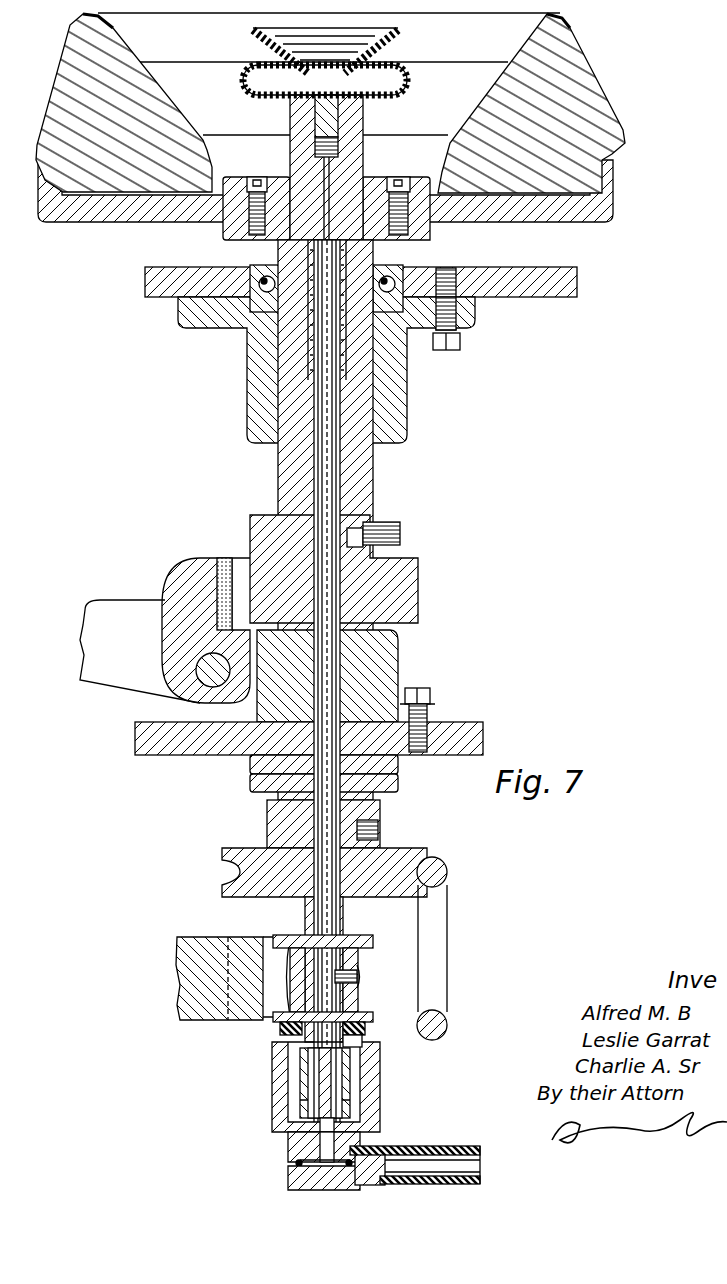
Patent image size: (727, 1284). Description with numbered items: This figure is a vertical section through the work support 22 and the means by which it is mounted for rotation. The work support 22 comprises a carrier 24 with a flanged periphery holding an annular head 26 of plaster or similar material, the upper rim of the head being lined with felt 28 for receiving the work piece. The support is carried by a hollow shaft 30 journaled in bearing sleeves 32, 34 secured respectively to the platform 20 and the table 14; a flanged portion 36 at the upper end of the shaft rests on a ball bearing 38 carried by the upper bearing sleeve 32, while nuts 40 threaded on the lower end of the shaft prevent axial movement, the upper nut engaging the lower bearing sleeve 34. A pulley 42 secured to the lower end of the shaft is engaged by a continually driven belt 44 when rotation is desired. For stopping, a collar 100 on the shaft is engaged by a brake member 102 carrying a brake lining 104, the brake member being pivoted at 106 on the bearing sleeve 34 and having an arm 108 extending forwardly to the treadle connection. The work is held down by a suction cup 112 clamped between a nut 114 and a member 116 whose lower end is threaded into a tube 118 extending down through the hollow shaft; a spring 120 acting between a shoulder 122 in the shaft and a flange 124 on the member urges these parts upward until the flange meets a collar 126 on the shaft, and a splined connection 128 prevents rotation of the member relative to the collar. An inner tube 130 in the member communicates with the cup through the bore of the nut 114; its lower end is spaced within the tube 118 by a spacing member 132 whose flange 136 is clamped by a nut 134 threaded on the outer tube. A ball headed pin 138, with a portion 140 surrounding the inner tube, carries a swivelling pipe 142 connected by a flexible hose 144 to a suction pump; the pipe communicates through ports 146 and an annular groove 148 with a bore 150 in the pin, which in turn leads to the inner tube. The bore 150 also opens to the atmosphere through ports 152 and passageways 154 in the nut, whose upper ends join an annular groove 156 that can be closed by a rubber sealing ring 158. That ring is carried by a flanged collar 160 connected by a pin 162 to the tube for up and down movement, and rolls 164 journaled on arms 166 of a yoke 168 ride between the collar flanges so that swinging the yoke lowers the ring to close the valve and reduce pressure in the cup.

The table 14 is at (465, 722).
The platform 20 is at (548, 298).
The work support 22 is at (659, 127).
The carrier 24 is at (616, 200).
The annular head 26 is at (603, 95).
The felt 28 is at (565, 28).
The hollow shaft 30 is at (373, 492).
The bearing sleeve 32 is at (408, 422).
The bearing sleeve 34 is at (398, 673).
The flanged portion 36 is at (415, 248).
The ball bearing 38 is at (400, 258).
The nuts 40 is at (398, 785).
The pulley 42 is at (410, 850).
The belt 44 is at (447, 872).
The collar 100 is at (418, 595).
The brake member 102 is at (190, 572).
The brake lining 104 is at (225, 558).
The pivot 106 is at (210, 678).
The arm 108 is at (110, 602).
The suction cup 112 is at (285, 62).
The nut 114 is at (345, 78).
The member 116 is at (342, 112).
The tube 118 is at (346, 925).
The spring 120 is at (305, 322).
The shoulder 122 is at (300, 385).
The flange 124 is at (286, 242).
The collar 126 is at (290, 210).
The splined connection 128 is at (356, 212).
The tube 130 is at (330, 1078).
The spacing member 132 is at (343, 1063).
The nut 134 is at (350, 1087).
The flange 136 is at (350, 1097).
The ball headed pin 138 is at (290, 1140).
The portion 140 is at (303, 1105).
The pipe 142 is at (377, 1148).
The flexible hose 144 is at (473, 1147).
The ports 146 is at (300, 1162).
The annular groove 148 is at (290, 1177).
The bore 150 is at (307, 1158).
The ports 152 is at (313, 1130).
The passageways 154 is at (358, 1077).
The annular groove 156 is at (357, 1035).
The rubber sealing ring 158 is at (293, 1027).
The flanged collar 160 is at (355, 970).
The pin 162 is at (357, 978).
The rolls 164 is at (268, 957).
The arms 166 is at (285, 940).
The yoke 168 is at (195, 937).